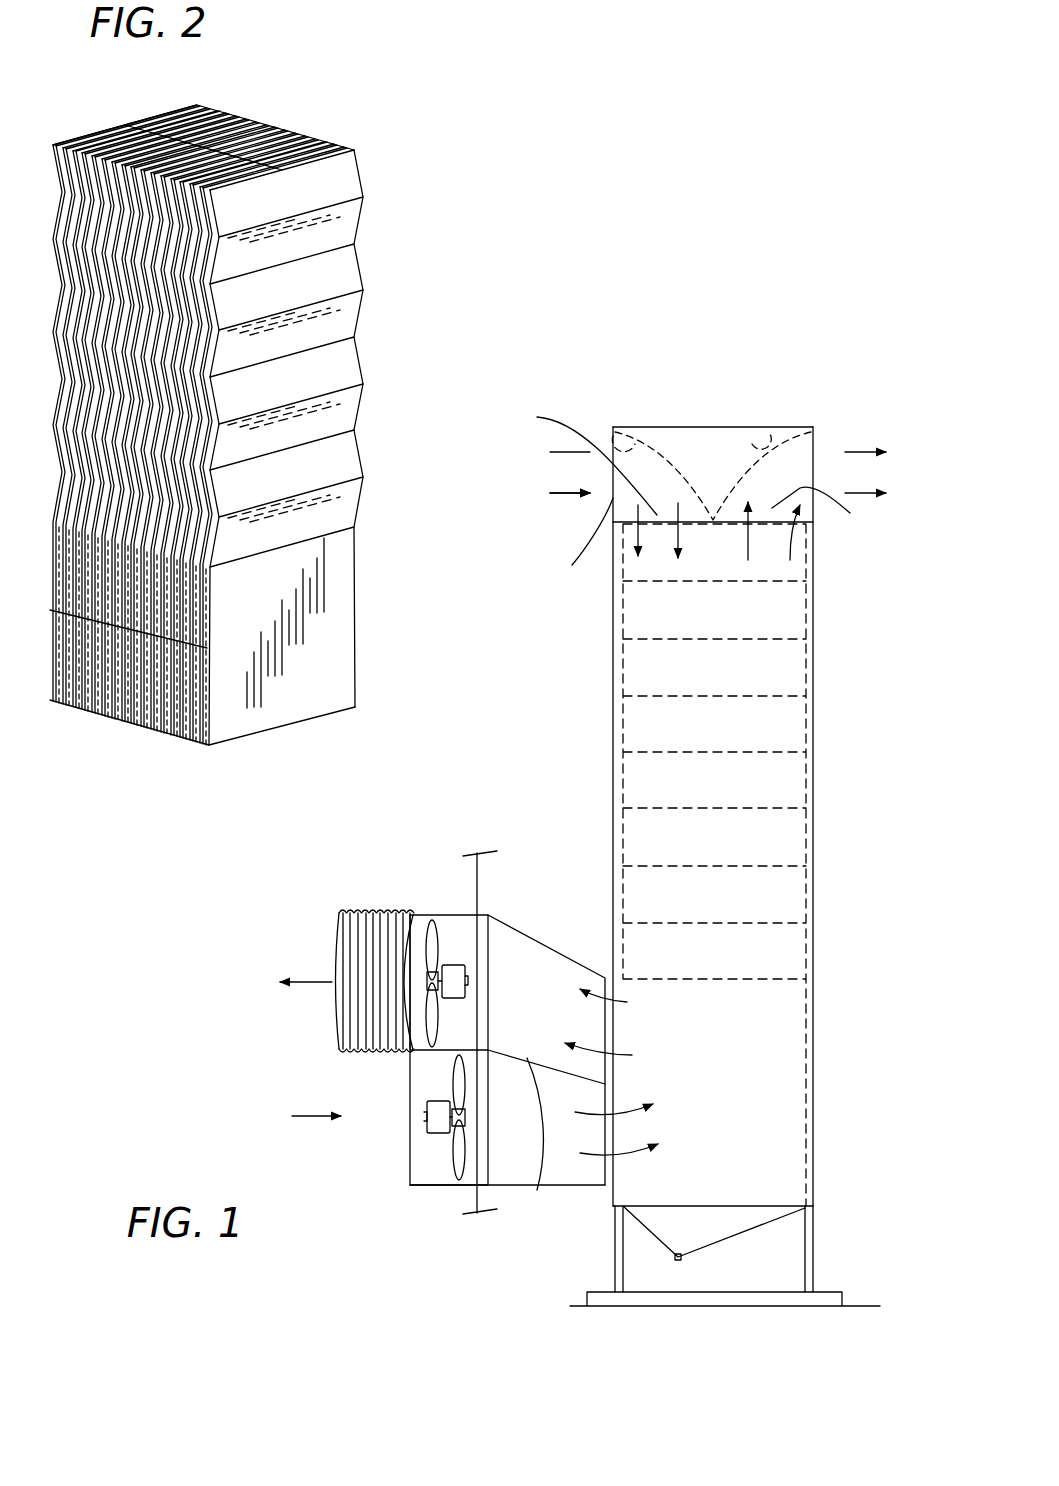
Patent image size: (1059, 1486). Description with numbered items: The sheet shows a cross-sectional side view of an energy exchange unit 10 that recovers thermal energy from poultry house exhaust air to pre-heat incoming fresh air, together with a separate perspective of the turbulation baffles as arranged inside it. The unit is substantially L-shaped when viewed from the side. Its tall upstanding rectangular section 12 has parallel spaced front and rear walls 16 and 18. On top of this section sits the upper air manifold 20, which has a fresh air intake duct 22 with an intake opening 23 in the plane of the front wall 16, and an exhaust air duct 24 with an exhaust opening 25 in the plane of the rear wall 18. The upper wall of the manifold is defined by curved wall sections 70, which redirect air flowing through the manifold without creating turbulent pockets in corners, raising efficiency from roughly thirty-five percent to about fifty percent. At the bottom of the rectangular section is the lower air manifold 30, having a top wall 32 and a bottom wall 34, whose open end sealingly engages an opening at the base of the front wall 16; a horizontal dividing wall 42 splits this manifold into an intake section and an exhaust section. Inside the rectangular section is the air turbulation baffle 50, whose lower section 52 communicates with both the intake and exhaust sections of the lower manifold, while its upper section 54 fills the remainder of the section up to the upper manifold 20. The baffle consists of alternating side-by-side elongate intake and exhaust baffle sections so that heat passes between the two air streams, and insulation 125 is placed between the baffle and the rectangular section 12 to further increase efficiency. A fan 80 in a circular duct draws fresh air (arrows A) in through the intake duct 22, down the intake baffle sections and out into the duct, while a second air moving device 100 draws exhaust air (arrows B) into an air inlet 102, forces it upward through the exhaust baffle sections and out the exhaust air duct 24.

In FIG. 1, the energy exchange unit 10 is at (722, 418).
In FIG. 1, the upstanding rectangular section 12 is at (820, 698).
In FIG. 1, the front wall 16 is at (613, 697).
In FIG. 1, the rear wall 18 is at (813, 795).
In FIG. 1, the upper air manifold 20 is at (676, 425).
In FIG. 1, the fresh air intake duct 22 is at (579, 459).
In FIG. 1, the intake opening 23 is at (573, 542).
In FIG. 1, the exhaust air duct 24 is at (827, 516).
In FIG. 1, the exhaust opening 25 is at (813, 458).
In FIG. 1, the curved wall sections 70 is at (773, 440).
In FIG. 1, the insulation 125 is at (806, 915).
In FIG. 1, the lower air manifold 30 is at (515, 1200).
In FIG. 1, the top wall 32 is at (557, 952).
In FIG. 1, the bottom wall 34 is at (580, 1185).
In FIG. 1, the dividing wall 42 is at (537, 1190).
In FIG. 1, the fan 80 is at (432, 925).
In FIG. 1, the second air moving device 100 is at (458, 1085).
In FIG. 1, the air inlet 102 is at (410, 1160).
In FIG. 2, the air turbulation baffle 50 is at (348, 112).
In FIG. 2, the lower section 52 is at (325, 665).
In FIG. 2, the upper section 54 is at (300, 378).